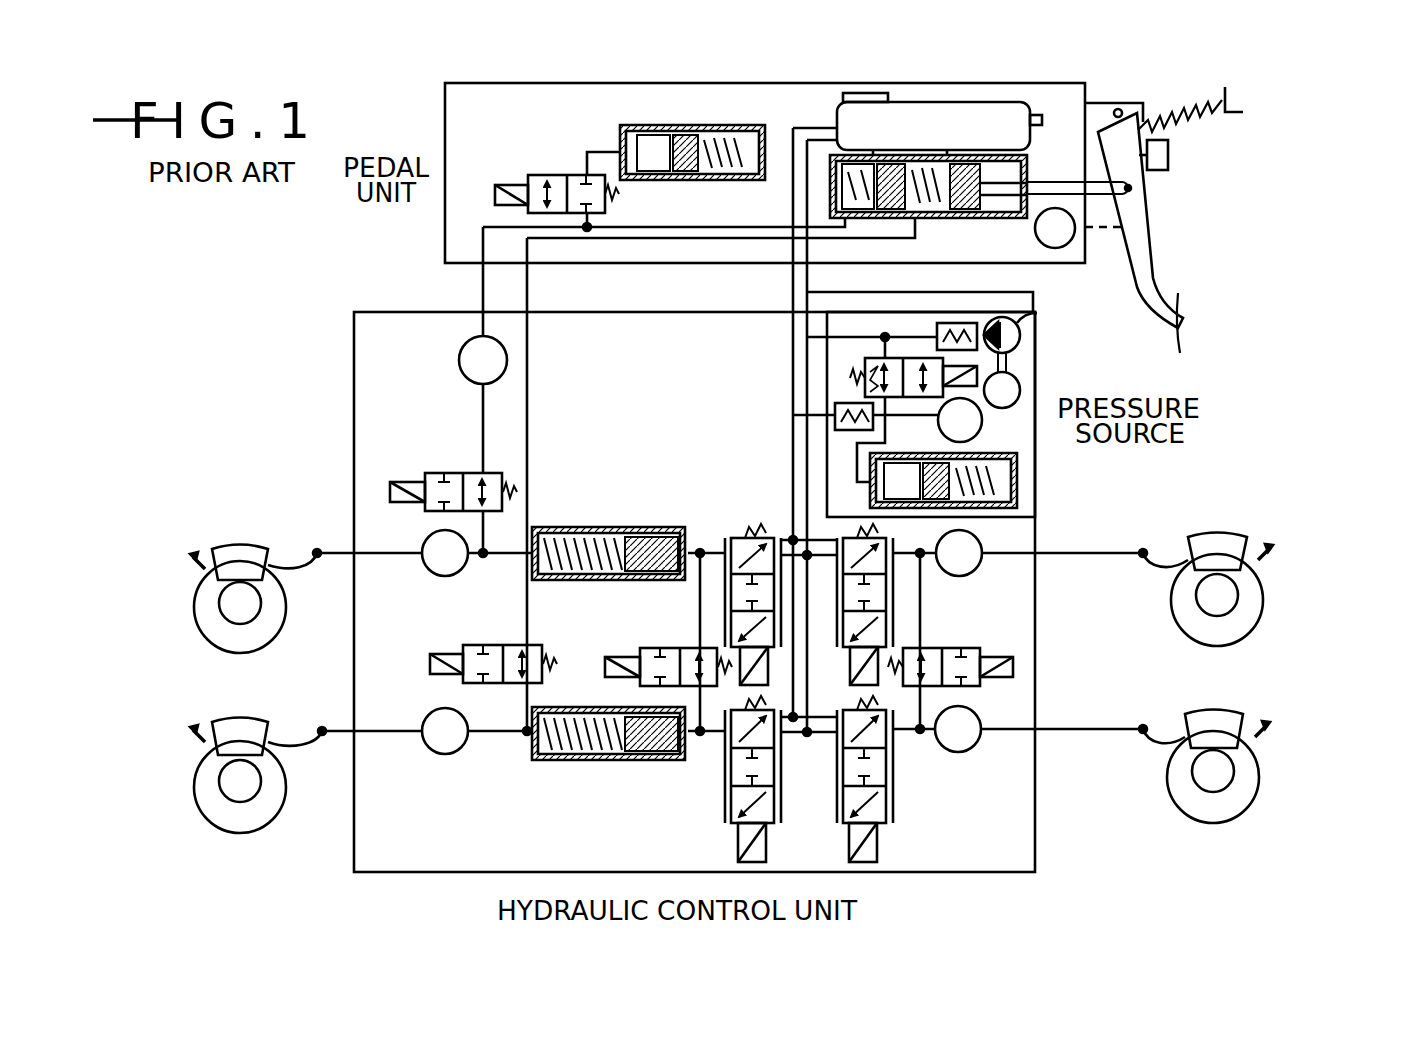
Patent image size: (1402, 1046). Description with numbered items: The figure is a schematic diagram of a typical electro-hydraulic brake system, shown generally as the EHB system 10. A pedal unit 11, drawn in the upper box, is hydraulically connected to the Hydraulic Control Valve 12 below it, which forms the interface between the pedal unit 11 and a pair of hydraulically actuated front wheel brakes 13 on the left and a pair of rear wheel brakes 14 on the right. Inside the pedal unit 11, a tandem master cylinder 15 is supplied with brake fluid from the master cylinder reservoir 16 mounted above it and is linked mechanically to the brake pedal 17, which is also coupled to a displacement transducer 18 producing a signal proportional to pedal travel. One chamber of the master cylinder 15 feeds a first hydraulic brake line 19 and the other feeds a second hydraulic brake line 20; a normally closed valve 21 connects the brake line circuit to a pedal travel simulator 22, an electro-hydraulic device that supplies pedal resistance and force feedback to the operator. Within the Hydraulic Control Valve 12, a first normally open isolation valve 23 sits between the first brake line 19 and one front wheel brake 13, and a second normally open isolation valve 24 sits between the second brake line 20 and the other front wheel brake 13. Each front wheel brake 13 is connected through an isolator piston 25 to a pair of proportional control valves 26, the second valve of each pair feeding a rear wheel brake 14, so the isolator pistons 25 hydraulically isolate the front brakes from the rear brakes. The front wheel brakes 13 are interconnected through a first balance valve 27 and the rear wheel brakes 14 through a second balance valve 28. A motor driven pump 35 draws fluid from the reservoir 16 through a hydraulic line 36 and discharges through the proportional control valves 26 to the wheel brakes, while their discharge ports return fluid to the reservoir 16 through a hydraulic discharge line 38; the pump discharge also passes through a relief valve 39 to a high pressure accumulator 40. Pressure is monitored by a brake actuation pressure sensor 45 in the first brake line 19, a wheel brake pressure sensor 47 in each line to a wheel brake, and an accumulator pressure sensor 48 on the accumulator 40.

The EHB system 10 is at (1256, 240).
The pedal unit 11 is at (445, 225).
The Hydraulic Control Valve (HCV) 12 is at (354, 385).
The front wheel brakes 13 is at (230, 546).
The rear wheel brakes 14 is at (1236, 536).
The tandem master cylinder 15 is at (948, 222).
The master cylinder reservoir 16 is at (1015, 137).
The brake pedal 17 is at (1183, 300).
The displacement transducer 18 is at (1055, 248).
The first hydraulic brake line 19 is at (483, 297).
The second hydraulic brake line 20 is at (527, 292).
The normally closed valve 21 is at (528, 175).
The pedal travel simulator 22 is at (642, 125).
The first normally open isolation valve 23 is at (432, 473).
The second normally open isolation valve 24 is at (492, 645).
The isolator piston 25 is at (558, 527).
The proportional control valves 26 is at (752, 535).
The first balance valve 27 is at (652, 648).
The second balance valve 28 is at (945, 648).
The motor driven pump 35 is at (1040, 318).
The hydraulic line 36 is at (838, 292).
The hydraulic discharge line 38 is at (790, 310).
The relief valve 39 is at (862, 372).
The high pressure accumulator 40 is at (1022, 495).
The brake actuation pressure sensor 45 is at (470, 372).
The wheel brake pressure sensor 47 is at (440, 577).
The accumulator pressure sensor 48 is at (982, 425).